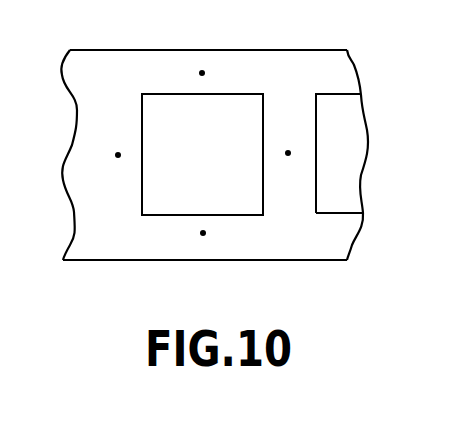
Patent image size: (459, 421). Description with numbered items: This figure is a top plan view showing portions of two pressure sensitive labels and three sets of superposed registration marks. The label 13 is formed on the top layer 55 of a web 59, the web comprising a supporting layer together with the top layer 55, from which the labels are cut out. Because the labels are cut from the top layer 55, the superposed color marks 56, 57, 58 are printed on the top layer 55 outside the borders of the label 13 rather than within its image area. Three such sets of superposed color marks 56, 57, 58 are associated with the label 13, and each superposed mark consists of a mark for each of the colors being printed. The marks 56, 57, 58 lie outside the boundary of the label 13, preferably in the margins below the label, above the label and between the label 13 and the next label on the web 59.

The label 13 is at (155, 100).
The top layer 55 is at (343, 231).
The superposed color mark 56 is at (203, 233).
The superposed color mark 57 is at (118, 155).
The superposed color mark 58 is at (202, 73).
The web 59 is at (363, 118).